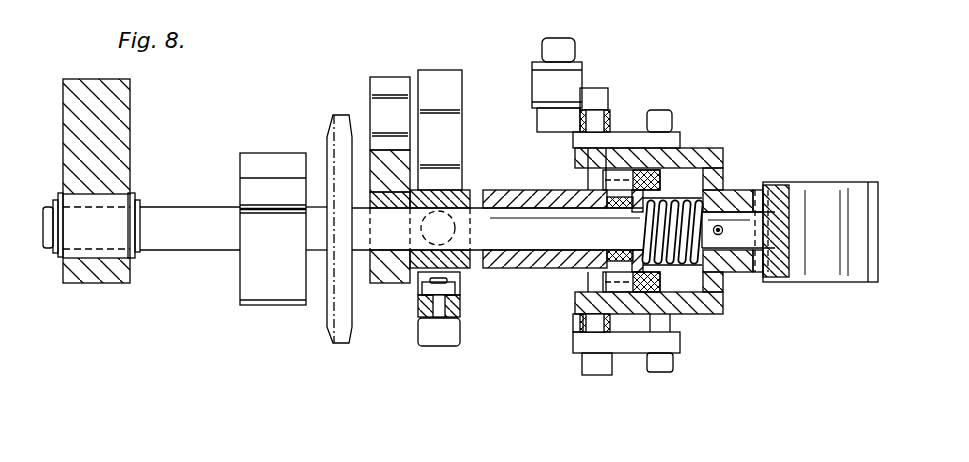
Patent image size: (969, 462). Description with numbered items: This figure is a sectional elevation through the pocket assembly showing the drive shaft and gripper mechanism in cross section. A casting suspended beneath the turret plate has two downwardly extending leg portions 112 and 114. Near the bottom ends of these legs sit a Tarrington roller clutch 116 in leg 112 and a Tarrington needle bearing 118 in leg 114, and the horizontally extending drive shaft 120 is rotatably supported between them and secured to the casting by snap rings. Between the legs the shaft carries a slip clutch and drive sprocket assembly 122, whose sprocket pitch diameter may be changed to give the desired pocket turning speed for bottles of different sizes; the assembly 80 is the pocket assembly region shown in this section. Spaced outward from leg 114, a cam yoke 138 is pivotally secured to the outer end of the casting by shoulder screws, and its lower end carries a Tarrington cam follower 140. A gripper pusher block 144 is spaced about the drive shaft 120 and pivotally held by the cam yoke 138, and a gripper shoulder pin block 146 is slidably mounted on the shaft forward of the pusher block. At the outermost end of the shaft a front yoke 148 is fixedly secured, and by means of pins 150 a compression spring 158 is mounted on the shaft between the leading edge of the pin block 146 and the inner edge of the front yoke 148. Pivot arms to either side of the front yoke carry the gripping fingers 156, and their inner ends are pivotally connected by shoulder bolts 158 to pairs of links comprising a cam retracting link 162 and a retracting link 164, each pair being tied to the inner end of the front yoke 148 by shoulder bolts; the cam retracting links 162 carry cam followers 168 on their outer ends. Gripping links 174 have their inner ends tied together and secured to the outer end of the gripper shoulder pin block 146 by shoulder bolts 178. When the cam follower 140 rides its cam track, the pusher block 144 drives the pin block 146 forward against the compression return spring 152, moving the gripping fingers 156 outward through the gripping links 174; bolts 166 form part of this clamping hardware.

The leg portion 112 is at (118, 103).
The roller clutch 116 is at (83, 253).
The drive shaft 120 is at (182, 207).
The hub assembly 80 is at (268, 313).
The slip clutch and drive sprocket assembly 122 is at (302, 307).
The leg portion 114 is at (380, 80).
The needle bearing 118 is at (390, 263).
The cam yoke 138 is at (452, 94).
The cam follower 140 is at (430, 345).
The gripper pusher block 144 is at (468, 188).
The gripper shoulder pin block 146 is at (509, 268).
The shoulder bolts 178 is at (607, 193).
The front yoke 148 is at (700, 153).
The pins 150 is at (720, 228).
The compression return spring 152 is at (698, 265).
The gripping fingers 156 is at (820, 190).
The gripping links 174 is at (683, 180).
The cam retracting link 162 is at (543, 118).
The retracting link 164 is at (627, 135).
The bolt 166 is at (601, 92).
The cam followers 168 is at (540, 64).
The shoulder bolts 158 is at (665, 128).